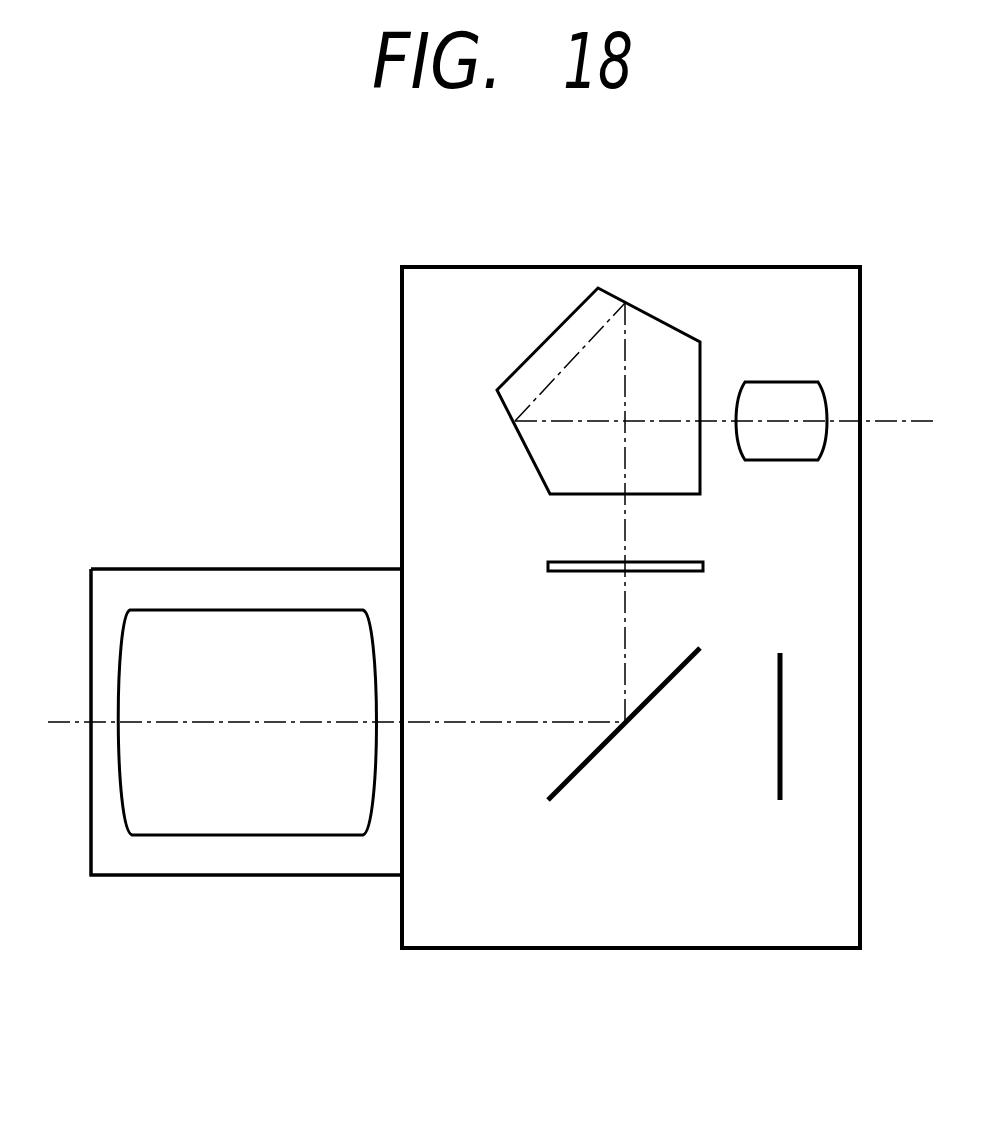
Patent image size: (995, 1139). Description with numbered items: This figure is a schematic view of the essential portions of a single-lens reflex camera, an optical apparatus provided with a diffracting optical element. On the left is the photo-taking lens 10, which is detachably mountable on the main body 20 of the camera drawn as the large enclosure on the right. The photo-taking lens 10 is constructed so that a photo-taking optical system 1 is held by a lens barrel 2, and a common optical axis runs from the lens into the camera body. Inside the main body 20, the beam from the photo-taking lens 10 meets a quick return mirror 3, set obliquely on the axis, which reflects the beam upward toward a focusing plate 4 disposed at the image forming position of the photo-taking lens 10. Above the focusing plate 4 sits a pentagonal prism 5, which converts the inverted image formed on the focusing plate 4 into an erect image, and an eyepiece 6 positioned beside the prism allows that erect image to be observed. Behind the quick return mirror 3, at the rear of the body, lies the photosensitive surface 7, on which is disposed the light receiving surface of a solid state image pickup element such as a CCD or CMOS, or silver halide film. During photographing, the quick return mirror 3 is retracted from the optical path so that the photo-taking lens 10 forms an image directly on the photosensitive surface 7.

The photo-taking optical system 1 is at (193, 610).
The lens barrel 2 is at (303, 569).
The quick return mirror 3 is at (583, 767).
The focusing plate 4 is at (672, 562).
The pentagonal prism 5 is at (658, 313).
The eyepiece 6 is at (790, 382).
The photosensitive surface 7 is at (777, 773).
The photo-taking lens 10 is at (186, 888).
The main body of camera 20 is at (862, 314).